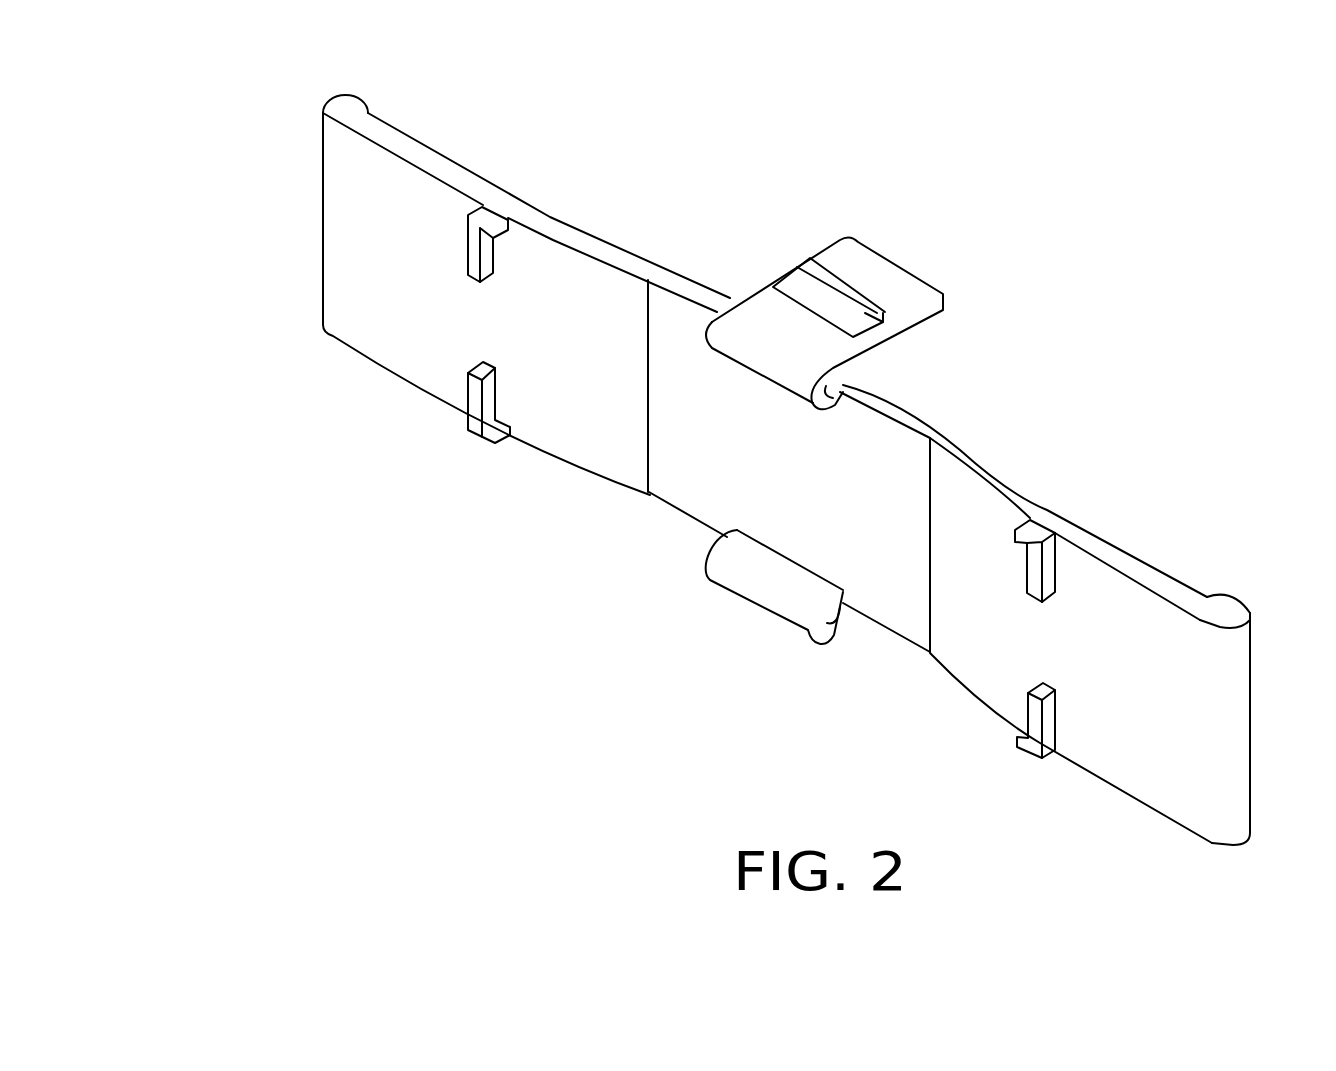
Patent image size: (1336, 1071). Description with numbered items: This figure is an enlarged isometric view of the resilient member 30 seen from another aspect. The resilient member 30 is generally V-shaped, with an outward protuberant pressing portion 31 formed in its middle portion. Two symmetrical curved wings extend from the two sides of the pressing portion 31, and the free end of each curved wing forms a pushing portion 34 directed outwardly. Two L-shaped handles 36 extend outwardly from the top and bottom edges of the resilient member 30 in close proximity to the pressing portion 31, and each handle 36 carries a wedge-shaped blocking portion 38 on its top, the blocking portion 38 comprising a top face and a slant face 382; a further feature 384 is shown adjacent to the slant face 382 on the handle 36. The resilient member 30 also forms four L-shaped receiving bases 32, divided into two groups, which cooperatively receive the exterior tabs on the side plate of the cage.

The resilient member 30 is at (293, 323).
The pressing portion 31 is at (883, 386).
The L-shaped receiving bases 32 is at (477, 434).
The pushing portion 34 is at (367, 106).
The L-shaped handle 36 is at (897, 292).
The wedge-shaped blocking portion 38 is at (883, 338).
The slant face 382 is at (795, 285).
The tab 384 is at (823, 268).